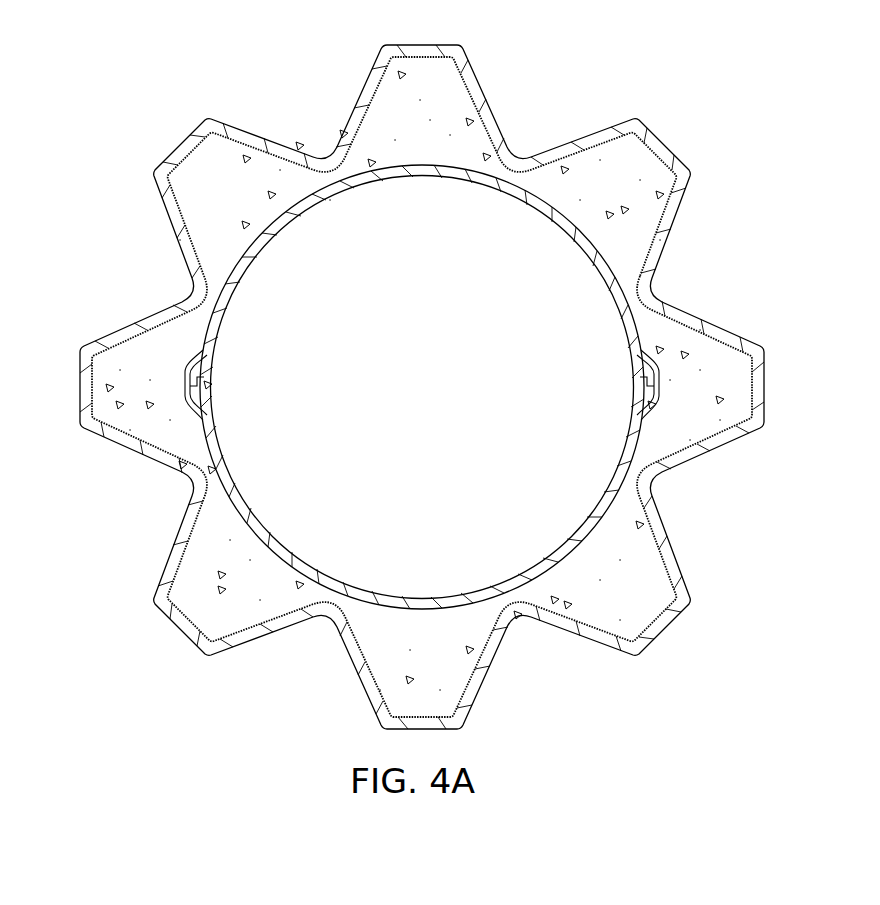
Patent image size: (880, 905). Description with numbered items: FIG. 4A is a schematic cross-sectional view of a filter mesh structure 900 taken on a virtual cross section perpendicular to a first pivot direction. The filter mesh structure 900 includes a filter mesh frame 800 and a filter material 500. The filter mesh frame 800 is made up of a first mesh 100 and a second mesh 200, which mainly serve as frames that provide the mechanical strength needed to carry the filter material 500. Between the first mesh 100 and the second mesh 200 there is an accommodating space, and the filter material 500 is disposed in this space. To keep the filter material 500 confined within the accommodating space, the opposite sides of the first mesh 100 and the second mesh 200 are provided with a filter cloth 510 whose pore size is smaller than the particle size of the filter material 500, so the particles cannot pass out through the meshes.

The filter mesh structure 900 is at (93, 62).
The filter mesh frame 800 is at (475, 387).
The first mesh 100 is at (648, 306).
The second mesh 200 is at (730, 343).
The filter material 500 is at (727, 380).
The filter cloth 510 is at (601, 250).